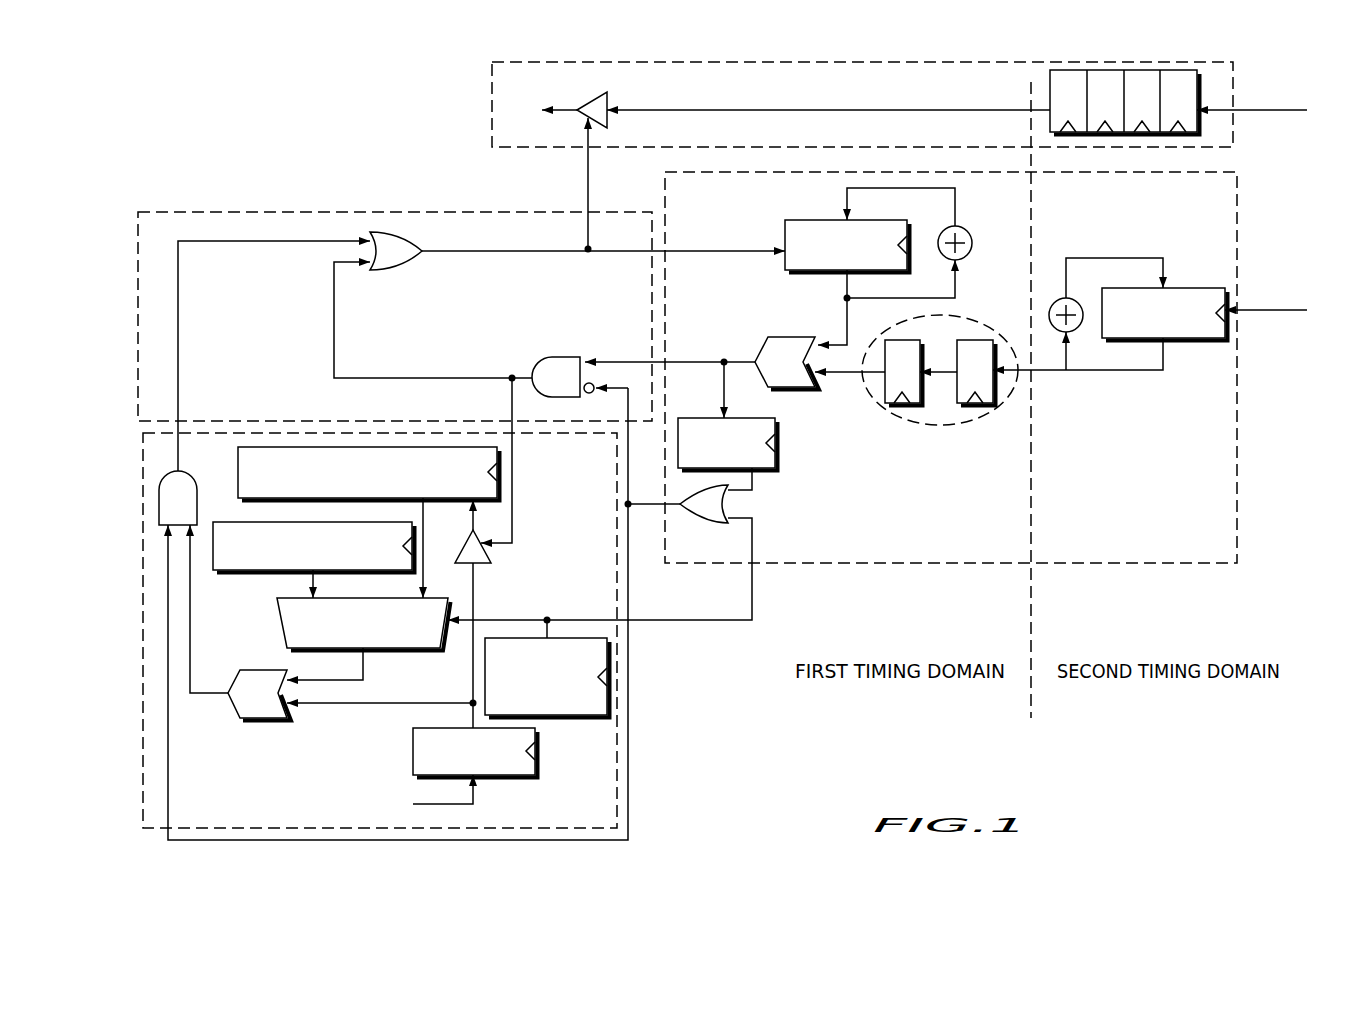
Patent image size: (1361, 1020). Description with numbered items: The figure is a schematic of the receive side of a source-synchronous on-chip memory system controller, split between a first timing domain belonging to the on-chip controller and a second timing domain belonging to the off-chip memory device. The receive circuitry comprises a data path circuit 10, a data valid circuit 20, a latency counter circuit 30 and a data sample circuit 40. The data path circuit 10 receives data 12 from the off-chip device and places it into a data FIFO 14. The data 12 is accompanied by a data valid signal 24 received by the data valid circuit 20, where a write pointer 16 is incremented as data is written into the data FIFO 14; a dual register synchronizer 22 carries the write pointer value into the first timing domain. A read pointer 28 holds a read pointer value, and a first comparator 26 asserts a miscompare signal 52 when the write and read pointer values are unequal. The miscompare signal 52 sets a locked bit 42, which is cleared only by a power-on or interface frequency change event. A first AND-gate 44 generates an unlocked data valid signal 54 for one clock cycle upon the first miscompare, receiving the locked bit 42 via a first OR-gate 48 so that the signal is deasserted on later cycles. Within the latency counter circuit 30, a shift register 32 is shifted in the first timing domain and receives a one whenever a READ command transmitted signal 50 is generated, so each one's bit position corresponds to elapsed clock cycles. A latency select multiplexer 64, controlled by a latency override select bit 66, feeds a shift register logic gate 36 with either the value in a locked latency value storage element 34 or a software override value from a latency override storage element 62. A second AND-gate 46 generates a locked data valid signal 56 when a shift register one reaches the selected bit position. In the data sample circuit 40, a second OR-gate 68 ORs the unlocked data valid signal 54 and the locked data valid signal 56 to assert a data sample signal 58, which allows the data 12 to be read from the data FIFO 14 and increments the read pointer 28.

The data path circuit 10 is at (492, 91).
The data 12 is at (1250, 108).
The data FIFO 14 is at (1200, 125).
The write pointer 16 is at (1196, 288).
The data valid circuit 20 is at (985, 585).
The dual register synchronizer 22 is at (945, 427).
The data valid signal 24 is at (1250, 310).
The first comparator 26 is at (795, 390).
The read pointer 28 is at (805, 219).
The latency counter circuit 30 is at (617, 757).
The shift register 32 is at (512, 780).
The locked latency value storage element 34 is at (238, 478).
The shift register logic gate 36 is at (232, 708).
The data sample circuit 40 is at (305, 217).
The locked bit 42 is at (703, 416).
The first AND-gate 44 is at (553, 357).
The second AND-gate 46 is at (162, 480).
The first OR-gate 48 is at (712, 528).
The READ command transmitted signal 50 is at (333, 794).
The miscompare signal 52 is at (698, 360).
The unlocked data valid signal 54 is at (334, 330).
The locked data valid signal 56 is at (225, 243).
The data sample signal 58 is at (588, 178).
The latency override storage element 62 is at (250, 580).
The latency select multiplexer 64 is at (412, 655).
The latency override select bit 66 is at (580, 720).
The second OR-gate 68 is at (389, 273).